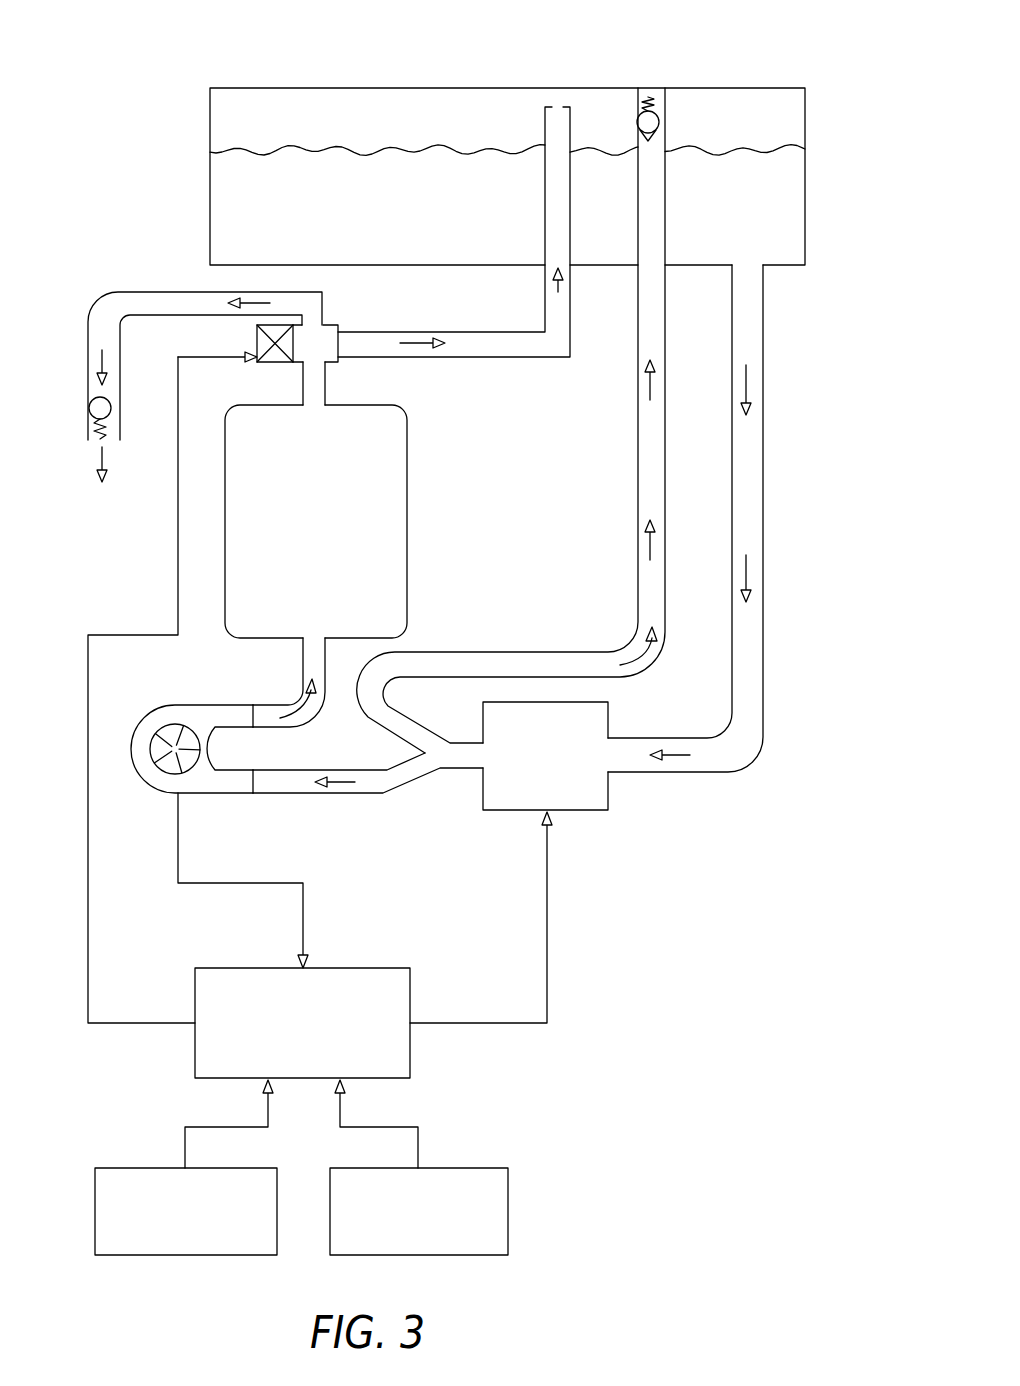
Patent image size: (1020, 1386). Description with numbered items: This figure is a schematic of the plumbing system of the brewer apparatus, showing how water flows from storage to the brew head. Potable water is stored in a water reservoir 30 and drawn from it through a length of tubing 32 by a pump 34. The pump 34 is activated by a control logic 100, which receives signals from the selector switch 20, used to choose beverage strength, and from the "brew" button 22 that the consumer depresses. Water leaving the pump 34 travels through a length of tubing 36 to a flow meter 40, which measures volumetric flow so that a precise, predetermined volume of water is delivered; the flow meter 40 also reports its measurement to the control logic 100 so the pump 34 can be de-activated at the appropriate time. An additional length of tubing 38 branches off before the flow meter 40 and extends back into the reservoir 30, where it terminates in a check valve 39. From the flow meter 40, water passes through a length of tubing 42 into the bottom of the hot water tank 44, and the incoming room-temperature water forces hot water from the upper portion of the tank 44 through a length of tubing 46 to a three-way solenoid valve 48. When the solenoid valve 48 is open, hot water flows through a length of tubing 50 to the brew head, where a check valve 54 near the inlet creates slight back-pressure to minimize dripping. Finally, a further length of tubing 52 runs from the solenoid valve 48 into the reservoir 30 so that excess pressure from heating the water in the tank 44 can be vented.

The selector switch 20 is at (133, 1168).
The "brew" button 22 is at (475, 1168).
The water reservoir 30 is at (745, 100).
The length of tubing 32 is at (757, 430).
The pump 34 is at (580, 795).
The length of tubing 36 is at (343, 793).
The additional length of tubing 38 is at (540, 660).
The check valve 39 is at (662, 120).
The flow meter 40 is at (195, 710).
The length of tubing 42 is at (303, 663).
The hot water tank 44 is at (392, 495).
The length of tubing 46 is at (313, 372).
The three-way solenoid valve 48 is at (338, 328).
The length of tubing 50 is at (158, 297).
The length of tubing 52 is at (462, 347).
The check valve 54 is at (90, 407).
The control logic 100 is at (397, 972).